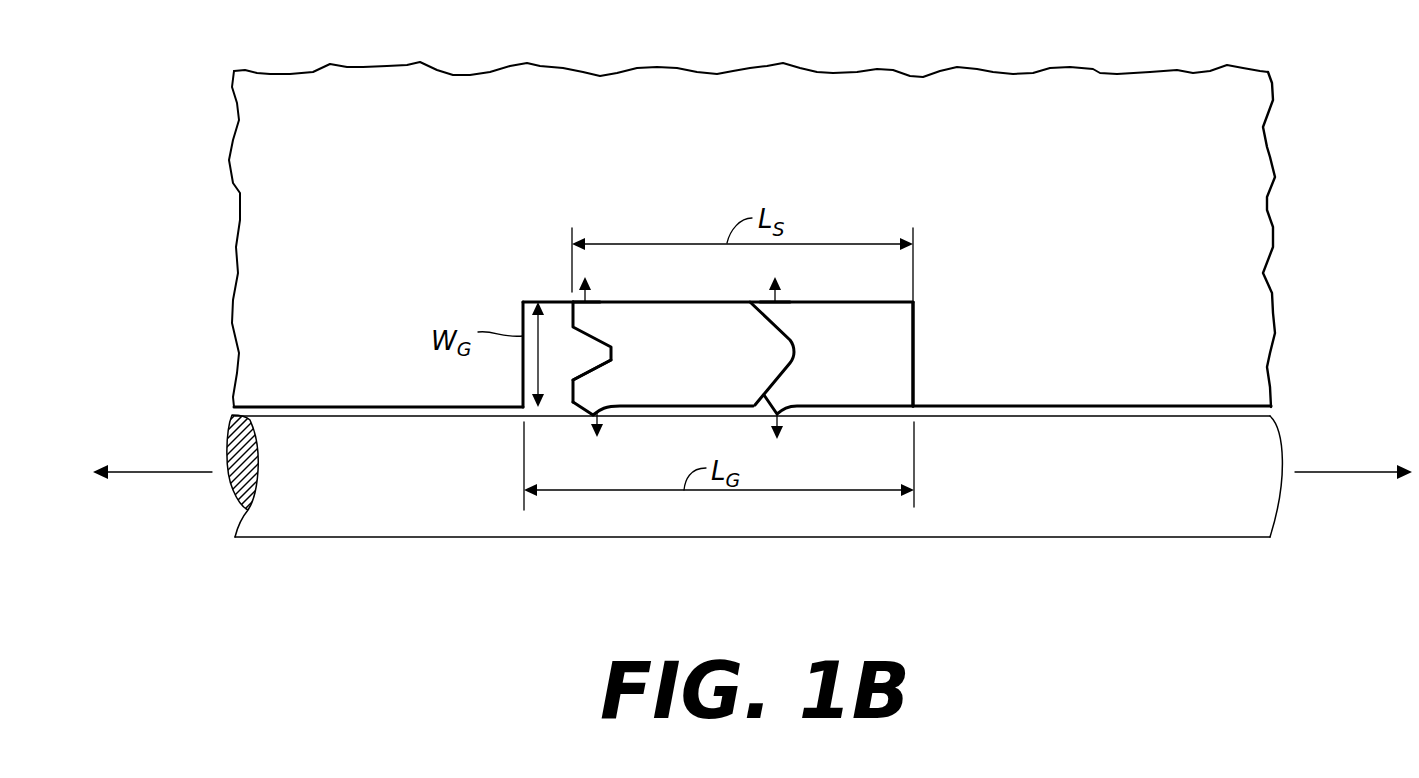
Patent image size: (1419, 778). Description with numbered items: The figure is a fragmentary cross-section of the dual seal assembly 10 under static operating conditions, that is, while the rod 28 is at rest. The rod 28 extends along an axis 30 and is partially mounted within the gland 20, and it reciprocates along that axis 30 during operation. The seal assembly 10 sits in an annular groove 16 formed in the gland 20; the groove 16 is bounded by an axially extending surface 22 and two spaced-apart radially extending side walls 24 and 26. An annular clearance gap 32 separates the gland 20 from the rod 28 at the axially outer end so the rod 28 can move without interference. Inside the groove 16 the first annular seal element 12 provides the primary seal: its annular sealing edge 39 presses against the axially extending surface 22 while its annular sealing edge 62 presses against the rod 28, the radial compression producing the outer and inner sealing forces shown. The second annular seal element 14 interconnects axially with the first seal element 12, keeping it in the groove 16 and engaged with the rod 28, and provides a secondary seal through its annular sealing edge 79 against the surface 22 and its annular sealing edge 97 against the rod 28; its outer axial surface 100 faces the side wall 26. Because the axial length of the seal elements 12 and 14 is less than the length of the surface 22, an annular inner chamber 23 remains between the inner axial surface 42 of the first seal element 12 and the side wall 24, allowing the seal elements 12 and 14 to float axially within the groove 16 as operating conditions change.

The dual seal assembly 10 is at (750, 322).
The first annular seal element 12 is at (645, 382).
The second annular seal element 14 is at (831, 354).
The annular groove 16 is at (698, 315).
The gland 20 is at (719, 216).
The axially extending surface 22 is at (683, 303).
The annular inner chamber 23 is at (548, 305).
The radially extending side wall 24 is at (523, 372).
The radially extending side wall 26 is at (897, 355).
The rod 28 is at (427, 527).
The axis 30 is at (128, 472).
The annular clearance gap 32 is at (263, 407).
The annular sealing edge 39 is at (588, 306).
The inner axial surface 42 is at (578, 360).
The annular sealing edge 62 is at (600, 400).
The annular sealing edge 79 is at (777, 295).
The annular sealing edge 97 is at (778, 408).
The outer axial surface 100 is at (913, 377).